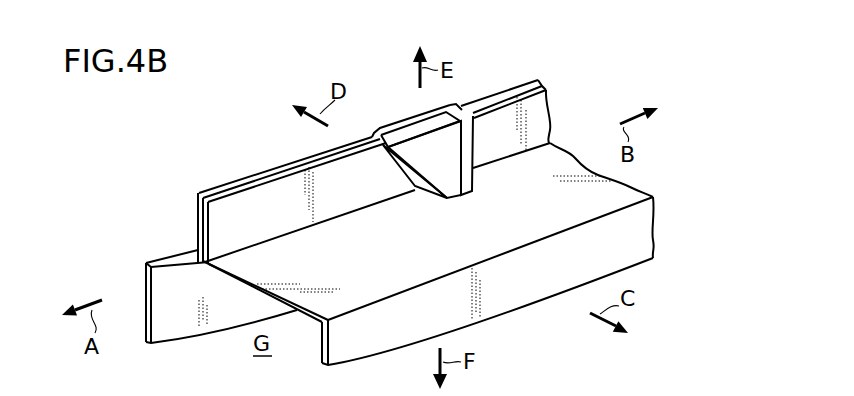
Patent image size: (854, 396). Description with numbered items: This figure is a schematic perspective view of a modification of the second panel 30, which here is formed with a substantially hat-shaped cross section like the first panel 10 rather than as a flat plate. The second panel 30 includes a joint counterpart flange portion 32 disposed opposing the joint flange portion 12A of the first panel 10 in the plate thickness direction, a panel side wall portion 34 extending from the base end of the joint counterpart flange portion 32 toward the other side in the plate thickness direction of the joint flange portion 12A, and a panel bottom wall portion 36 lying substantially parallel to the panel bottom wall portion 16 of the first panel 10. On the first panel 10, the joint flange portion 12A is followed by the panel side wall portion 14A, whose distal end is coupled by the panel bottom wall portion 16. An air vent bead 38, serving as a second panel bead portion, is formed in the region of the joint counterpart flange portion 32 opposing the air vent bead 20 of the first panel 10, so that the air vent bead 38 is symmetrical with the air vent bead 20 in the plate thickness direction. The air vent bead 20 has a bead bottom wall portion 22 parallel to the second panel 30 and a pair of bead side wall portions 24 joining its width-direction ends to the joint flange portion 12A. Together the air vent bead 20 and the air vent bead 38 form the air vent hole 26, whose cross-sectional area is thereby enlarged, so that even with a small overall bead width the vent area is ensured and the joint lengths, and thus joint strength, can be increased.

The first panel 10 is at (476, 247).
The joint flange portion 12A is at (537, 105).
The panel side wall portion 14A is at (623, 183).
The panel bottom wall portion 16 is at (640, 236).
The air vent bead 20 is at (447, 190).
The bead bottom wall portion 22 is at (458, 196).
The bead side wall portion 24 is at (418, 189).
The air vent hole 26 is at (445, 102).
The second panel 30 is at (540, 75).
The joint counterpart flange portion 32 is at (198, 208).
The panel side wall portion 34 is at (188, 255).
The panel bottom wall portion 36 is at (146, 318).
The air vent bead 38 is at (397, 111).